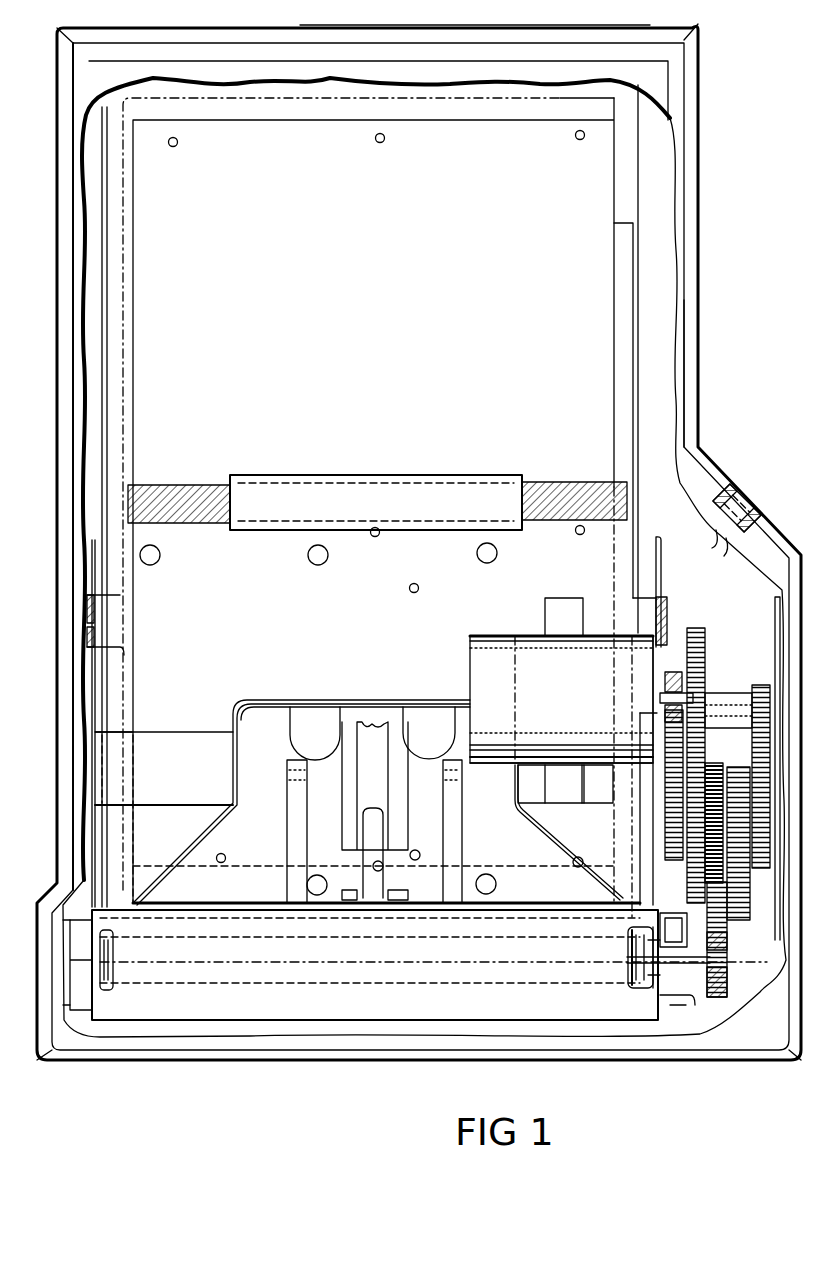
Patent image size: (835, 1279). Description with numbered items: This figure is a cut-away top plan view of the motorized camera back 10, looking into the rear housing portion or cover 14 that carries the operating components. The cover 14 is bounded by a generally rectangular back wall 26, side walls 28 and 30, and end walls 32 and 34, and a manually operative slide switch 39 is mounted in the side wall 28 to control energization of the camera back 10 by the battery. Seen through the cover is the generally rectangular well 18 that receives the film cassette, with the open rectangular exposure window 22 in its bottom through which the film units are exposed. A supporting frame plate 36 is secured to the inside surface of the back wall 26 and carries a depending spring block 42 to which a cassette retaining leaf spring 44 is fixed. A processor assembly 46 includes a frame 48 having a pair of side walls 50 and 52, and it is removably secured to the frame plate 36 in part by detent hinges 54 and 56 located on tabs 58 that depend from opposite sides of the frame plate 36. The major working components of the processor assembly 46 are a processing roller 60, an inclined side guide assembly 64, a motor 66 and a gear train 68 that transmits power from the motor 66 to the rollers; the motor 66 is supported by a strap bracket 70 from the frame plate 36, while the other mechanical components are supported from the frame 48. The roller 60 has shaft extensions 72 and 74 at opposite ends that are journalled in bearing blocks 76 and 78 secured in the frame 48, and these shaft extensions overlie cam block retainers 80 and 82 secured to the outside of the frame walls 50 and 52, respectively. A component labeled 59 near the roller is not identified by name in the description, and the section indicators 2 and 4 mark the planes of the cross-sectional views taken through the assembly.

The section line 2- 2 is at (340, 5).
The section line 4- 4 is at (687, 553).
The motorized camera back 10 is at (712, 268).
The rear housing portion or cover 14 is at (702, 344).
The well 18 is at (107, 290).
The exposure window 22 is at (133, 343).
The back wall 26 is at (482, 80).
The side wall 28 is at (698, 418).
The side wall 30 is at (68, 268).
The end wall 32 is at (470, 24).
The end wall 34 is at (218, 1064).
The supporting frame plate 36 is at (124, 414).
The slide switch 39 is at (746, 494).
The spring block 42 is at (272, 490).
The cassette retaining leaf spring 44 is at (160, 490).
The processor assembly 46 is at (268, 693).
The frame 48 is at (109, 859).
The side wall 50 is at (95, 706).
The side wall 52 is at (662, 548).
The detent hinge 54 is at (93, 610).
The detent hinge 56 is at (656, 620).
The tab 58 is at (94, 636).
The bottom frame 59 is at (280, 1008).
The processing roller 60 is at (640, 985).
The inclined side guide assembly 64 is at (280, 808).
The motor 66 is at (570, 703).
The gear train 68 is at (728, 684).
The strap bracket 70 is at (546, 614).
The shaft extension 72 is at (106, 982).
The shaft extension 74 is at (724, 963).
The bearing block 76 is at (88, 1002).
The bearing block 78 is at (648, 990).
The cam block retainer 80 is at (80, 1012).
The cam block retainer 82 is at (678, 1006).